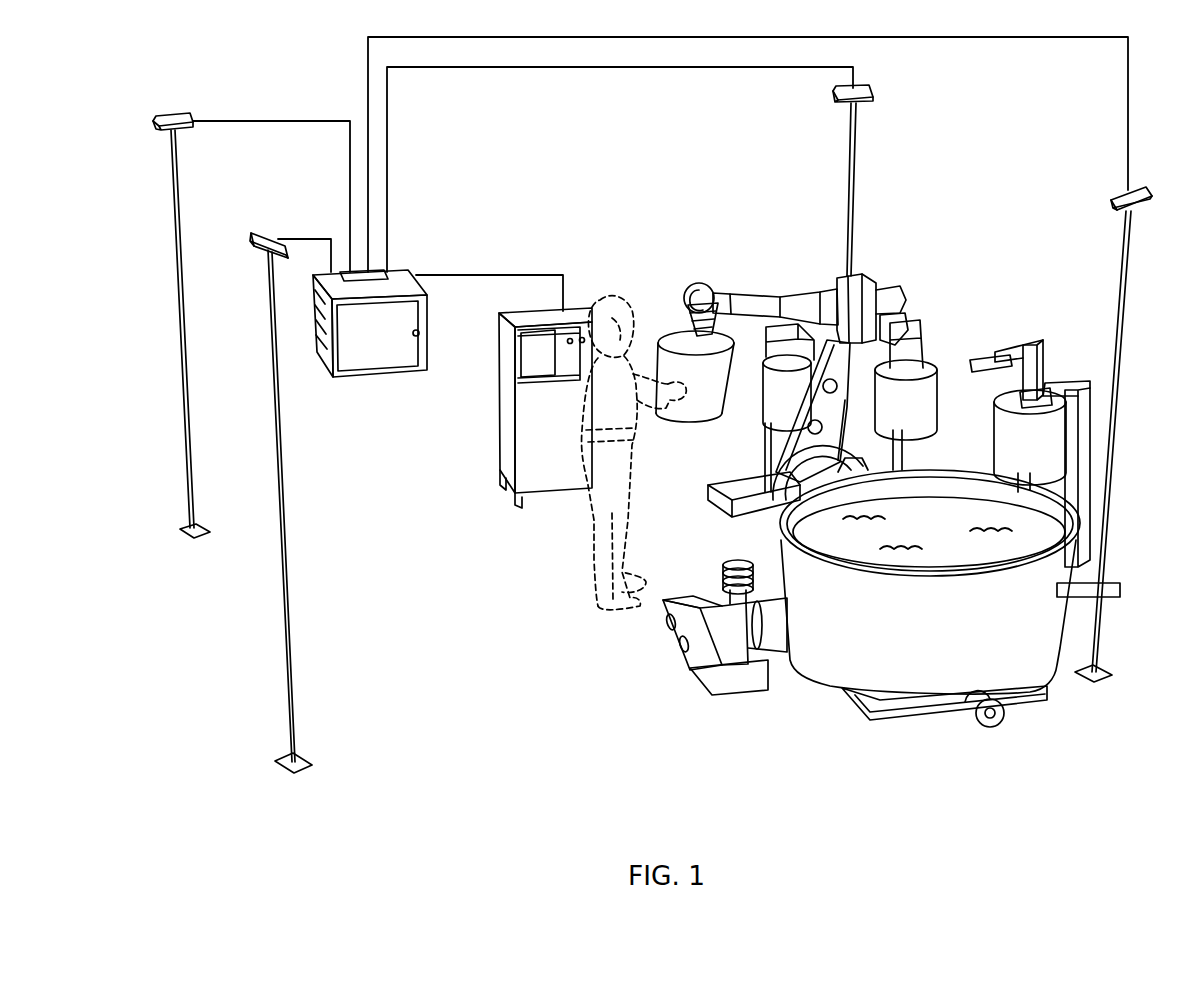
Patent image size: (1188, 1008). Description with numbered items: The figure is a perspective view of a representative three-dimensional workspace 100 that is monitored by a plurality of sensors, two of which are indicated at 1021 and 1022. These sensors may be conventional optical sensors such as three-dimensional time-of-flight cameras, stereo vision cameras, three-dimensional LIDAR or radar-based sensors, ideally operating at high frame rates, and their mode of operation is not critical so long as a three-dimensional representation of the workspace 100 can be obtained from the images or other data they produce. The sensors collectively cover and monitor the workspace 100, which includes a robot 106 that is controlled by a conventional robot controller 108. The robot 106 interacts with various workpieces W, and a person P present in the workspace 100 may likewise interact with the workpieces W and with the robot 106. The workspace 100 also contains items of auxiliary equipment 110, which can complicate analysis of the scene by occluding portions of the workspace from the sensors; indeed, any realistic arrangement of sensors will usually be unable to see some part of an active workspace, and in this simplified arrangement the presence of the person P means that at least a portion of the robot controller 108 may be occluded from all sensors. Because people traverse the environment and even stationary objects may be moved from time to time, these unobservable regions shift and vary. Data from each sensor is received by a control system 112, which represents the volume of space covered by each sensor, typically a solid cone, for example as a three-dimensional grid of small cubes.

The 3D workspace 100 is at (497, 746).
The sensor 1021 is at (178, 155).
The sensor 1022 is at (874, 98).
The robot 106 is at (763, 298).
The robot controller 108 is at (541, 501).
The auxiliary equipment 110 is at (823, 680).
The control system 112 is at (351, 378).
The workpiece W is at (662, 318).
The person P is at (595, 557).